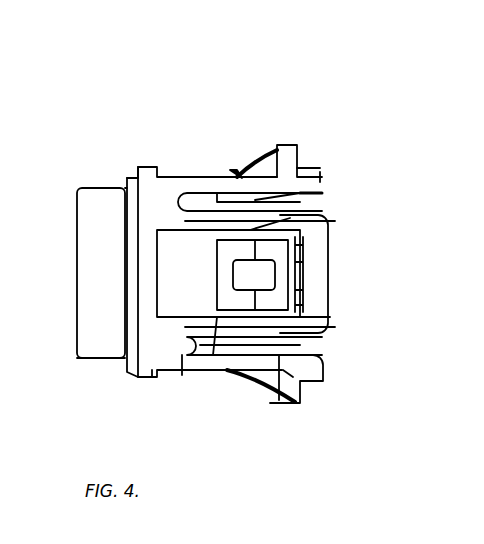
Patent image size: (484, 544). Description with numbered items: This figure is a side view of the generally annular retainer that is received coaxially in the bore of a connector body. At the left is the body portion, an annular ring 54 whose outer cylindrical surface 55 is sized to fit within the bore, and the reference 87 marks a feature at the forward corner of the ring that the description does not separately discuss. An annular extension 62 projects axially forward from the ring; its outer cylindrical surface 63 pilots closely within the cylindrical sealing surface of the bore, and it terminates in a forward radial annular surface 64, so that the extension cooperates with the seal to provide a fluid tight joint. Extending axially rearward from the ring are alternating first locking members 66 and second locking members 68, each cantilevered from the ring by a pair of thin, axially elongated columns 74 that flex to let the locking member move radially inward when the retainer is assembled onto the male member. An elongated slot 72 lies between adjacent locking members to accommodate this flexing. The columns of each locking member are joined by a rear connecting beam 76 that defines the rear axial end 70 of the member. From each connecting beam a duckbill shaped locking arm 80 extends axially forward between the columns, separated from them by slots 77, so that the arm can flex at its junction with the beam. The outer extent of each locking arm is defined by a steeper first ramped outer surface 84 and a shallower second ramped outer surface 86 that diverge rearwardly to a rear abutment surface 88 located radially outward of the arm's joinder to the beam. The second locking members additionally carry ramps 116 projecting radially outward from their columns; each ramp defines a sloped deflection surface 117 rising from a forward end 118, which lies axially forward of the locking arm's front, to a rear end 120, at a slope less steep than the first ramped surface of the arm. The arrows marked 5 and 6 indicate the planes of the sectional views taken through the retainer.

The section line 5- 5 is at (343, 274).
The section line 6- 6 is at (192, 442).
The annular ring 54 is at (151, 386).
The outer cylindrical surface 55 is at (145, 380).
The annular extension 62 is at (82, 371).
The outer cylindrical surface 63 is at (90, 188).
The forward radial annular surface 64 is at (77, 333).
The first locking member 66 is at (337, 174).
The second locking member 68 is at (323, 233).
The rear axial end 70 is at (345, 373).
The elongated slot 72 is at (302, 208).
The column 74 is at (276, 168).
The rear connecting beam 76 is at (330, 168).
The slot 77 is at (330, 320).
The duckbill shaped locking arm 80 is at (285, 145).
The first ramped outer surface 84 is at (240, 172).
The second ramped outer surface 86 is at (262, 180).
The mounting plate 87 is at (128, 378).
The rear abutment surface 88 is at (305, 155).
The ramp 116 is at (213, 360).
The deflection surface 117 is at (237, 172).
The forward end 118 is at (182, 376).
The rear end 120 is at (283, 395).